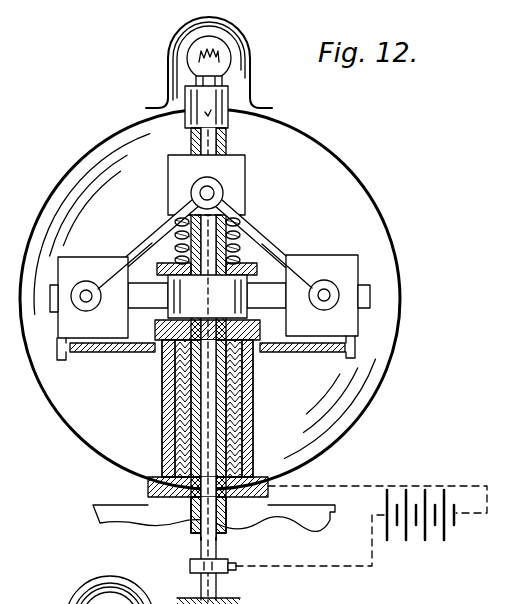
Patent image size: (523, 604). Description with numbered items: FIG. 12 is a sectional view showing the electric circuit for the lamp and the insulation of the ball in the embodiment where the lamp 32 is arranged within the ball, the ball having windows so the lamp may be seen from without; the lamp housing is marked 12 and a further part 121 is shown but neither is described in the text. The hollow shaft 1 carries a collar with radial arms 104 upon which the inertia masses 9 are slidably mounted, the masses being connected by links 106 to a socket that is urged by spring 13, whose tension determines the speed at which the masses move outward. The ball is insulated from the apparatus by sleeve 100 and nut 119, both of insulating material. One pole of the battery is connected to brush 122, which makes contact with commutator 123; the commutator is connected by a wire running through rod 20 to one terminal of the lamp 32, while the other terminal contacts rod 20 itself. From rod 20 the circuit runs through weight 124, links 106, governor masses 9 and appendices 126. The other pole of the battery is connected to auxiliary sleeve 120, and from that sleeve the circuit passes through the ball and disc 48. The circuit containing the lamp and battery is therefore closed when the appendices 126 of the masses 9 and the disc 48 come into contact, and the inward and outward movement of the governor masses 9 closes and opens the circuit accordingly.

The lamp housing 12 is at (167, 52).
The lamp 32 is at (231, 66).
The weight 124 is at (234, 158).
The links 106 is at (150, 236).
The inertia masses 9 is at (90, 258).
The spring 13 is at (234, 256).
The radial arms 104 is at (153, 307).
The appendices 126 is at (62, 358).
The nut 119 is at (150, 343).
The flange 48 is at (306, 351).
The sleeve 100 is at (217, 408).
The hollow shaft 1 is at (163, 402).
The auxiliary sleeve 120 is at (242, 422).
The rod 20 is at (205, 426).
The commutator 123 is at (191, 567).
The brush 122 is at (236, 574).
The wheel 121 is at (88, 602).